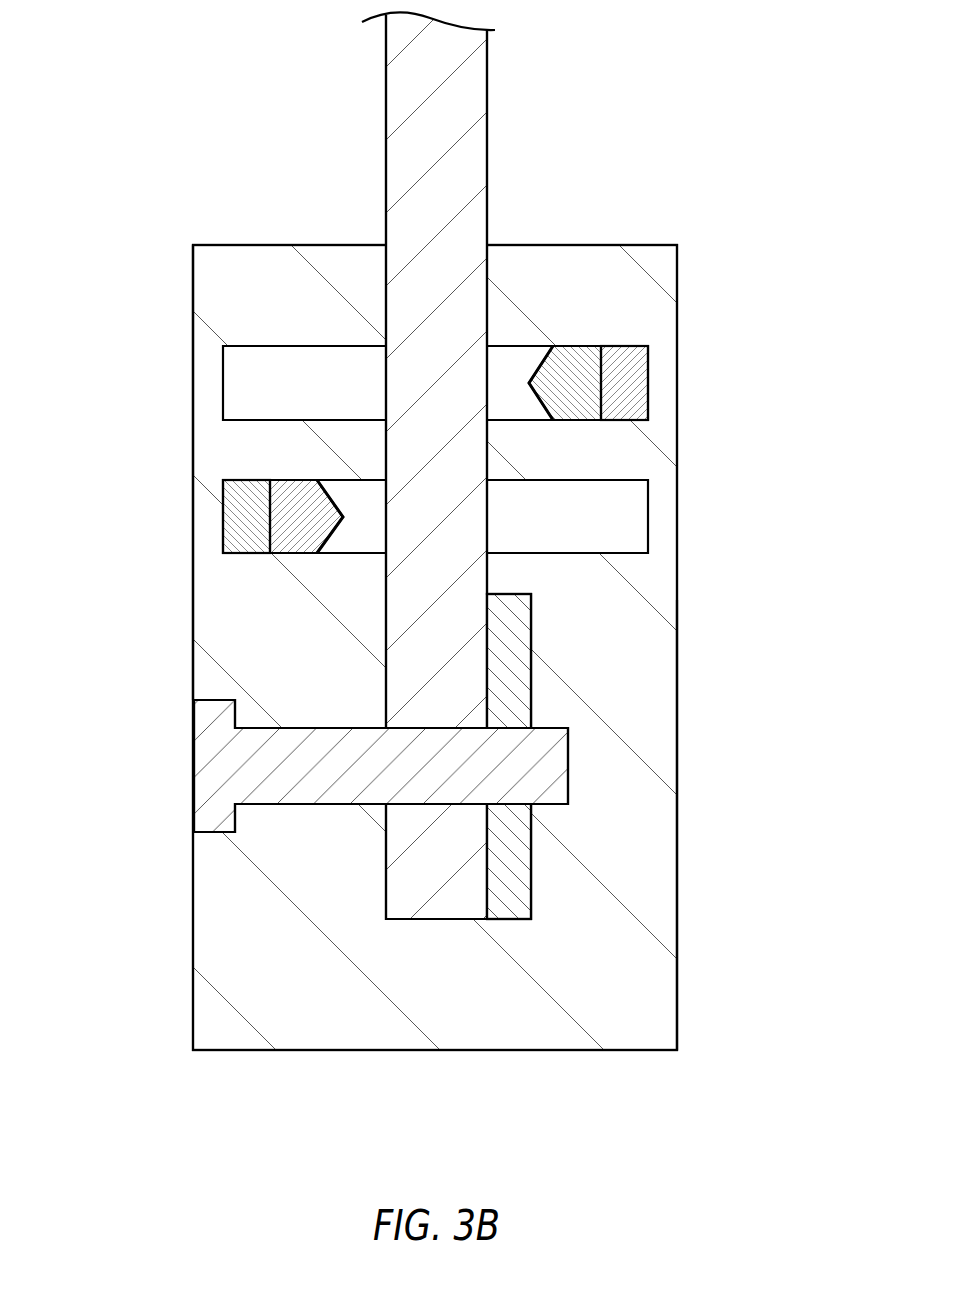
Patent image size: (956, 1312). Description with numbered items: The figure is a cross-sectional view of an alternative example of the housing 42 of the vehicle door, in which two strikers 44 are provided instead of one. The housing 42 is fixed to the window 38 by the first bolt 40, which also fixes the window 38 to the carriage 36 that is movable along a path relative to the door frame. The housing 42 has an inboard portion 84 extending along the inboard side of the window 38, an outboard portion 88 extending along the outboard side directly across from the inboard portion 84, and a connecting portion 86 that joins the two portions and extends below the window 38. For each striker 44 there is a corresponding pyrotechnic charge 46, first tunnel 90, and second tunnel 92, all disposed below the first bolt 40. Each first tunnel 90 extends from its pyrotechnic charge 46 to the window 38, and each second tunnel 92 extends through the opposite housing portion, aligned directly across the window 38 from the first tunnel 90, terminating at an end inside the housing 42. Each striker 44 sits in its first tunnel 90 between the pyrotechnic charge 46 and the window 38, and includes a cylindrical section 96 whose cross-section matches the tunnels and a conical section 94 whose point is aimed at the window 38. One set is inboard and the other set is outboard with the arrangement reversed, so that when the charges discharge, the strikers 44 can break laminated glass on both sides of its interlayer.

The carriage 36 is at (531, 872).
The window 38 is at (487, 95).
The first bolt 40 is at (193, 765).
The housing 42 is at (628, 1060).
The striker 44 is at (428, 404).
The pyrotechnic charge 46 is at (243, 555).
The inboard portion 84 is at (677, 983).
The connecting portion 86 is at (318, 1050).
The outboard portion 88 is at (193, 340).
The first tunnel 90 is at (352, 480).
The second tunnel 92 is at (253, 420).
The conical section 94 is at (290, 555).
The cylindrical section 96 is at (345, 530).